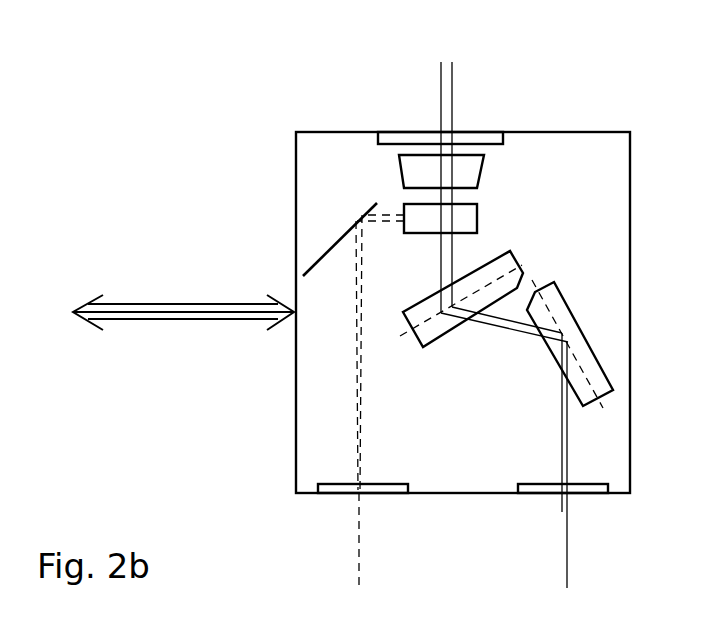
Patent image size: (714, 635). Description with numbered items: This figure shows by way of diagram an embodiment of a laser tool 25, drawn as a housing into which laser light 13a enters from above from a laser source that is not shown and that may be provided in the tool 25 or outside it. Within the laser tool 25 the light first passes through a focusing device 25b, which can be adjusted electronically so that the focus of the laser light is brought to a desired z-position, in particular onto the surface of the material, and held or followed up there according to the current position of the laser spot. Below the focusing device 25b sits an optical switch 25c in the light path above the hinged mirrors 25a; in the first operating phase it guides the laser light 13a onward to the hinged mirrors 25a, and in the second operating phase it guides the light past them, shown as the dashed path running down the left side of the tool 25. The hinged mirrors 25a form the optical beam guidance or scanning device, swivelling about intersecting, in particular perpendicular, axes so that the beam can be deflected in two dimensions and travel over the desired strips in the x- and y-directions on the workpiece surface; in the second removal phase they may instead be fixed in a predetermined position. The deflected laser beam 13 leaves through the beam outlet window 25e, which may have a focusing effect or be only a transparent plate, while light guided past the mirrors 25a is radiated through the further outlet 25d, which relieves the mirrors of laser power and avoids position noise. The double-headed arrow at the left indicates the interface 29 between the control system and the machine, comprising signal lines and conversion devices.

The laser beam 13 is at (566, 538).
The laser light 13a is at (446, 92).
The laser tool 25 is at (615, 198).
The hinged mirrors 25a is at (515, 255).
The focusing device 25b is at (480, 170).
The optical switch 25c is at (480, 218).
The further outlet 25d is at (330, 496).
The beam outlet window 25e is at (533, 496).
The interface 29 is at (186, 310).